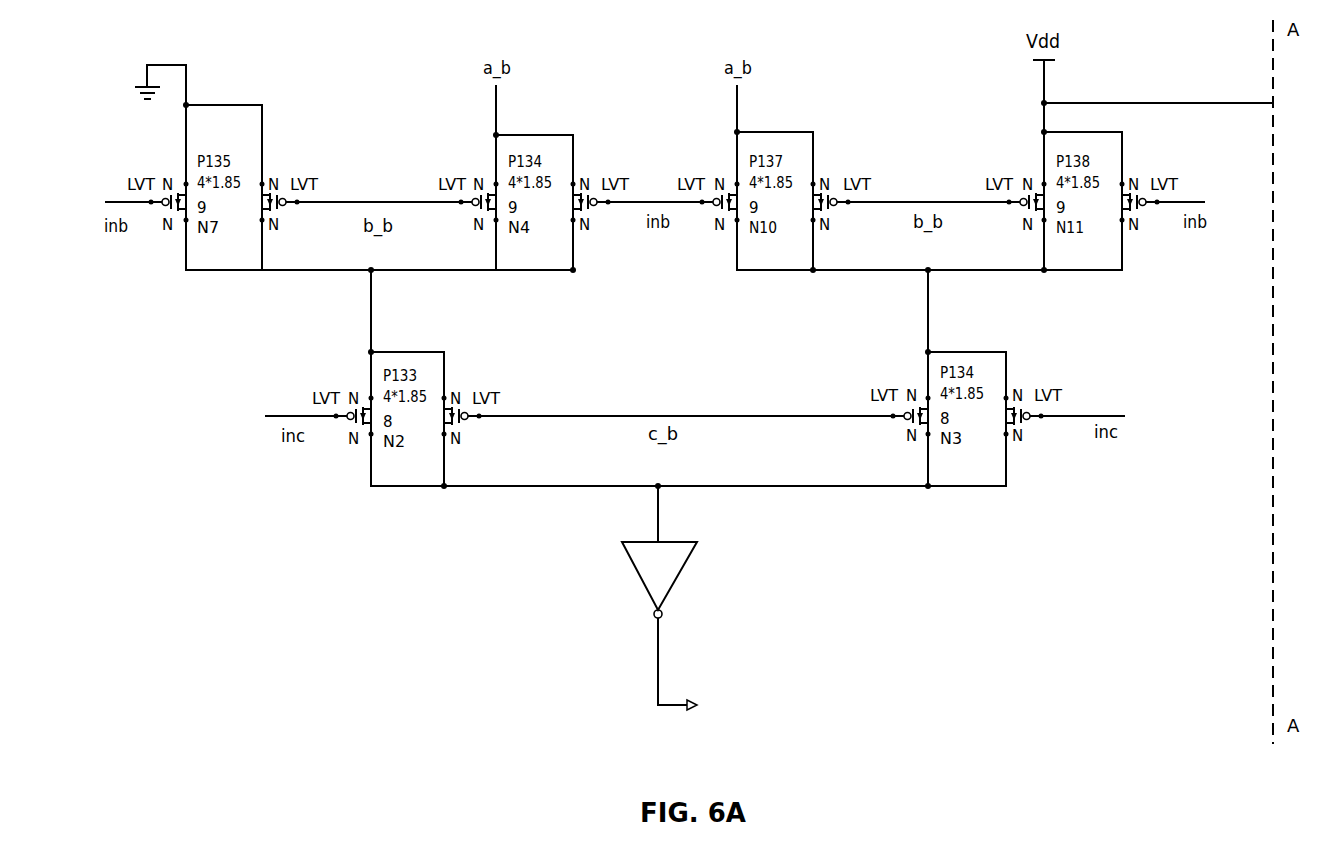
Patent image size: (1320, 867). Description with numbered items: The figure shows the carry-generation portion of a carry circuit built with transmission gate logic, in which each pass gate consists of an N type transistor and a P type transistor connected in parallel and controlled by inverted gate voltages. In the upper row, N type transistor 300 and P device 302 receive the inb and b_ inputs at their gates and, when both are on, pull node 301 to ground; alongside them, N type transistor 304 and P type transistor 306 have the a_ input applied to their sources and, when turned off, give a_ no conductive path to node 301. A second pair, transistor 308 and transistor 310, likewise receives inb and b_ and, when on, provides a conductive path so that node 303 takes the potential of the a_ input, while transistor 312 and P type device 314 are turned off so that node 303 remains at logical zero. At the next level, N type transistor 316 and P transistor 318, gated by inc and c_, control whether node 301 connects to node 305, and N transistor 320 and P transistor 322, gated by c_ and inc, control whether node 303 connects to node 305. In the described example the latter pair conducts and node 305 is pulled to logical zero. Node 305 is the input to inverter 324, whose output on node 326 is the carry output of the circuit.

The N type transistor 300 is at (160, 172).
The node 301 is at (190, 276).
The P device 302 is at (285, 168).
The node 303 is at (1118, 276).
The N type transistor 304 is at (472, 170).
The node 305 is at (400, 492).
The P type transistor 306 is at (603, 208).
The transistor 308 is at (712, 208).
The transistor 310 is at (838, 168).
The transistor 312 is at (1020, 166).
The P type device 314 is at (1145, 165).
The N type transistor 316 is at (348, 388).
The P transistor 318 is at (475, 428).
The N transistor 320 is at (900, 428).
The P transistor 322 is at (1030, 386).
The inverter 324 is at (722, 612).
The node 326 is at (658, 681).